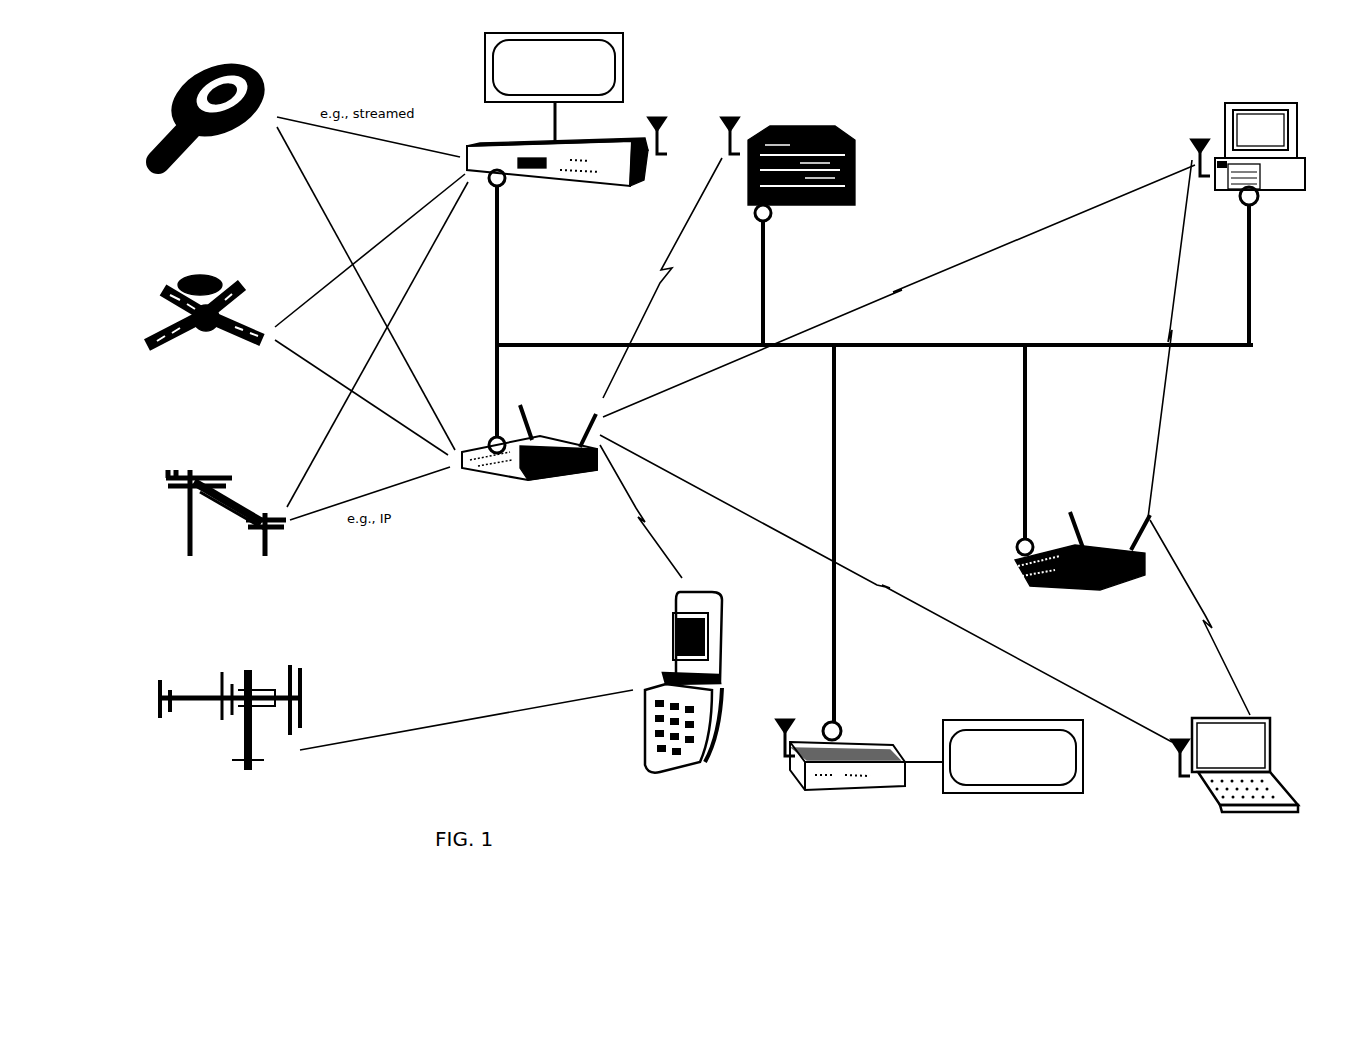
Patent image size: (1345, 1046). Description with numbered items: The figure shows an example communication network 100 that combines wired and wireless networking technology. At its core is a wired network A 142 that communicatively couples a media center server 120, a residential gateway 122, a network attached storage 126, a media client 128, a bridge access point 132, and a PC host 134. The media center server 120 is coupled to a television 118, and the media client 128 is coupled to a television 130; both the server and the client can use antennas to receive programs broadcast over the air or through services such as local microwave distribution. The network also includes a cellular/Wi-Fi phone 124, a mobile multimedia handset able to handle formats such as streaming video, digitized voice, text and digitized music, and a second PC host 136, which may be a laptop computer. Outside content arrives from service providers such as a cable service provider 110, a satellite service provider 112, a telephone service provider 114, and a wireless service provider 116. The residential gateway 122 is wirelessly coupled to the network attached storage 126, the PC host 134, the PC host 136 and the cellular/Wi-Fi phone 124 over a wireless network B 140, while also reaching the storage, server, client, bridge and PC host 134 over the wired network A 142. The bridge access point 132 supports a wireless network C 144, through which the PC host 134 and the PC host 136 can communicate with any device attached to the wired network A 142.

The communication network 100 is at (990, 138).
The cable service provider 110 is at (216, 158).
The satellite service provider 112 is at (204, 361).
The telephone service provider 114 is at (226, 560).
The wireless service provider 116 is at (229, 754).
The television 118 is at (554, 88).
The media center server 120 is at (567, 193).
The residential gateway 122 is at (529, 477).
The cellular/Wi-Fi phone 124 is at (661, 725).
The network attached storage 126 is at (788, 131).
The media client 128 is at (841, 784).
The television 130 is at (1013, 756).
The bridge access point 132 is at (1082, 587).
The PC host 134 is at (1248, 138).
The PC host 136 is at (1235, 778).
The wireless network B 140 is at (894, 450).
The wired network A 142 is at (875, 454).
The wireless network C 144 is at (1189, 437).